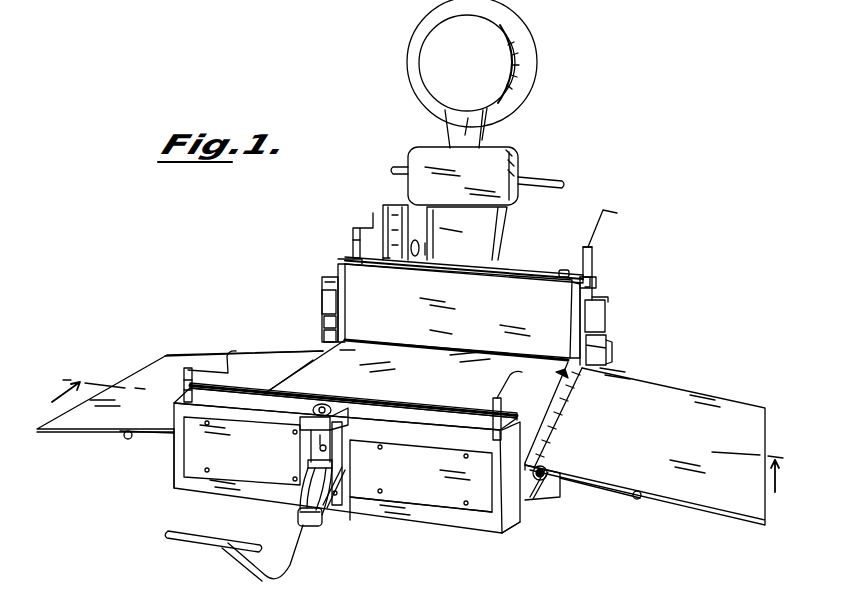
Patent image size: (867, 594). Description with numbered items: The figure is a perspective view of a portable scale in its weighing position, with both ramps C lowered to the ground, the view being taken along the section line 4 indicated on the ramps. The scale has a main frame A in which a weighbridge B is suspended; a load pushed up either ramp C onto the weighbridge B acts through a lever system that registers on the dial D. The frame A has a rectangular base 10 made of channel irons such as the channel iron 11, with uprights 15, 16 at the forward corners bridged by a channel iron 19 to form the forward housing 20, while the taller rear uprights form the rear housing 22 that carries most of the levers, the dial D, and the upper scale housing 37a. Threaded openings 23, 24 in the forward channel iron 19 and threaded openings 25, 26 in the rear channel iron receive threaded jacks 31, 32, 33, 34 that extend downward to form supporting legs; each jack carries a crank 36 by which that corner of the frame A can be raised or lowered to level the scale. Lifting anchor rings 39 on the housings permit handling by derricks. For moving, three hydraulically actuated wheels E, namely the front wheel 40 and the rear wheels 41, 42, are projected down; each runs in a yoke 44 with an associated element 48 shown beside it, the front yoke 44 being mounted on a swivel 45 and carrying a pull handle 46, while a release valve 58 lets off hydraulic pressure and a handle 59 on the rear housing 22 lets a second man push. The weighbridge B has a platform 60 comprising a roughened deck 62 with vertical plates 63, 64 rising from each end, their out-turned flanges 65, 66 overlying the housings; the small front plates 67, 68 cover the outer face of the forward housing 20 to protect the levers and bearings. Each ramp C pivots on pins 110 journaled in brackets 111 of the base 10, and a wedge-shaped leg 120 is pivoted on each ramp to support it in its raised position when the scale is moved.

The dial D is at (477, 70).
The handle 59 is at (540, 181).
The upper scale housing 37a is at (480, 226).
The release valve 58 is at (420, 248).
The vertical plate 64 is at (516, 315).
The horizontal out-turned flange 66 is at (502, 272).
The lifting anchor ring 39 is at (563, 272).
The crank 36 is at (356, 228).
The threaded jack 33 is at (351, 250).
The threaded opening 25 is at (345, 260).
The rear housing 22 is at (322, 277).
The clamp block 48 is at (322, 302).
The wheel 41 is at (324, 322).
The hydraulically actuated wheel E is at (324, 336).
The threaded jack 34 is at (594, 268).
The threaded opening 26 is at (598, 286).
The wheel 42 is at (614, 360).
The weighbridge B is at (433, 381).
The roughened deck 62 is at (357, 369).
The horizontal out-turned flange 65 is at (328, 394).
The platform 60 is at (568, 380).
The threaded opening 24 is at (500, 432).
The threaded opening 23 is at (196, 406).
The threaded jack 31 is at (185, 392).
The threaded jack 32 is at (490, 402).
The channel iron 19 is at (240, 418).
The rectangular base 10 is at (174, 488).
The forward housing 20 is at (478, 530).
The channel iron 11 is at (435, 520).
The front plate 67 is at (243, 455).
The front plate 68 is at (440, 479).
The upright 15 is at (174, 460).
The swivel 45 is at (318, 448).
The yoke 44 is at (308, 466).
The wheel 40 is at (300, 510).
The handle 46 is at (205, 540).
The ramp C is at (133, 417).
The leg 120 is at (140, 438).
The pin 110 is at (544, 468).
The bracket 111 is at (536, 484).
The upright 16 is at (522, 496).
The vertical plate 63 is at (540, 432).
The main frame A is at (519, 532).
The section line 4 is at (417, 423).